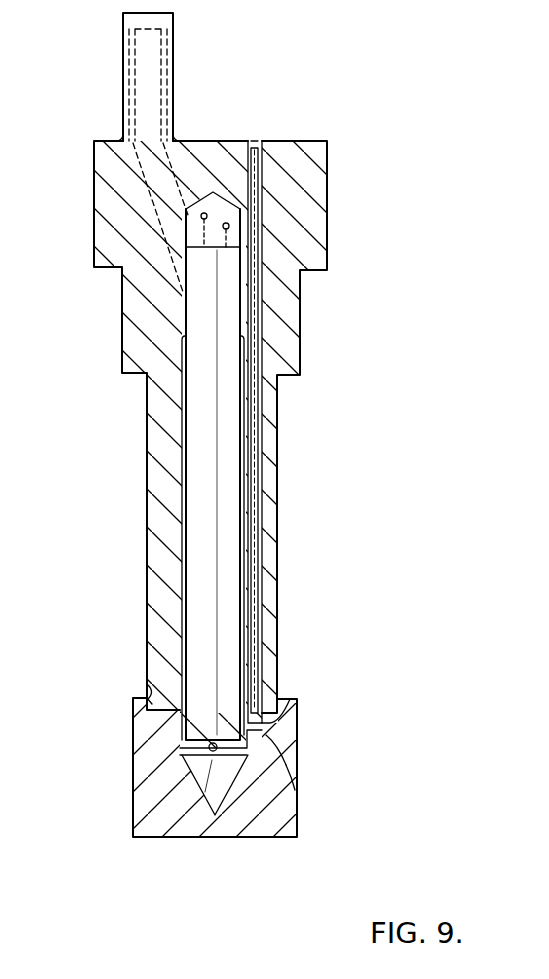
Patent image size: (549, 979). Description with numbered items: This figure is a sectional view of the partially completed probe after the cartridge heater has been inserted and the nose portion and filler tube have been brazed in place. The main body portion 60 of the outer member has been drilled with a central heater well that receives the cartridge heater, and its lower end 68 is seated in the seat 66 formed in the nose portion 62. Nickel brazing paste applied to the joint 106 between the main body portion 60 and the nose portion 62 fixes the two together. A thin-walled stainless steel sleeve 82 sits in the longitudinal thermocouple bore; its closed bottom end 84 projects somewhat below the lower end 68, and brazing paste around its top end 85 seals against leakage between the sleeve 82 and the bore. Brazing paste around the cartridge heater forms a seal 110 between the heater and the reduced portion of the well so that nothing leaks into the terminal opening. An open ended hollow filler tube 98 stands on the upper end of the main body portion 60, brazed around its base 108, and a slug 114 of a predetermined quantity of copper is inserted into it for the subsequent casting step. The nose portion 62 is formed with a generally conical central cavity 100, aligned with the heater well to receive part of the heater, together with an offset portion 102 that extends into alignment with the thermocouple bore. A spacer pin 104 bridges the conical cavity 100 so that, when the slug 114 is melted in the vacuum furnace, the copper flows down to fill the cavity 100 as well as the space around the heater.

The main body portion 60 is at (270, 437).
The nose portion 62 is at (282, 815).
The seat 66 is at (148, 690).
The lower end 68 is at (277, 718).
The metal sleeve 82 is at (262, 288).
The closed bottom end 84 is at (293, 783).
The top end 85 is at (249, 140).
The filler tube 98 is at (172, 40).
The central cavity 100 is at (200, 802).
The offset portion 102 is at (298, 750).
The spacer pin 104 is at (180, 748).
The joint 106 is at (146, 697).
The base 108 is at (176, 138).
The seal 110 is at (240, 255).
The slug 114 is at (148, 75).